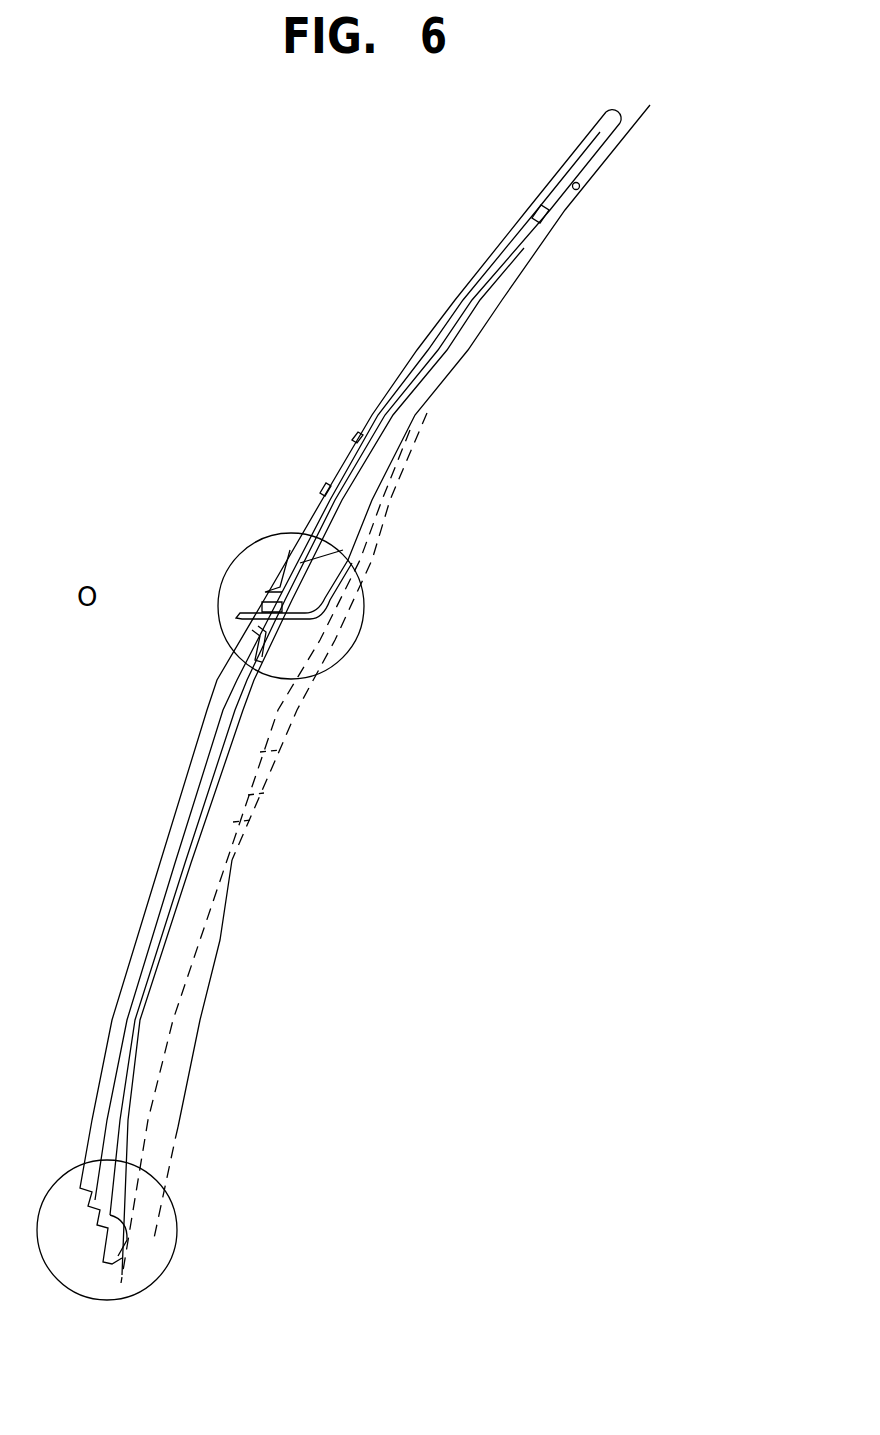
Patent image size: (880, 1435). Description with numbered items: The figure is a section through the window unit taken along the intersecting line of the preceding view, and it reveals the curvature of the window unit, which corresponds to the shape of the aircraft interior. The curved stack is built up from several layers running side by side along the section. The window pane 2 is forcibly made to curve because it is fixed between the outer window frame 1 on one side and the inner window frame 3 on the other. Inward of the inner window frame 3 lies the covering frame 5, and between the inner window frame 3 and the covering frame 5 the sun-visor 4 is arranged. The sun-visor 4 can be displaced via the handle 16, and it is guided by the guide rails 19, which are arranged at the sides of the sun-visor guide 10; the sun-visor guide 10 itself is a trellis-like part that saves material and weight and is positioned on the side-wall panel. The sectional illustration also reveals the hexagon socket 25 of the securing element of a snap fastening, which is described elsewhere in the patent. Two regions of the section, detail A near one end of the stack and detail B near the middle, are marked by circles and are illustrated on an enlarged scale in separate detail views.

The outer window frame 1 is at (204, 732).
The window pane 2 is at (173, 863).
The inner window frame 3 is at (133, 1003).
The sun-visor 4 is at (408, 378).
The covering frame 5 is at (132, 1140).
The sun-visor guide 10 is at (593, 147).
The handle 16 is at (265, 635).
The guide rails 19 is at (530, 222).
The hexagon socket 25 is at (217, 777).
The detail A is at (175, 1227).
The detail B is at (364, 605).